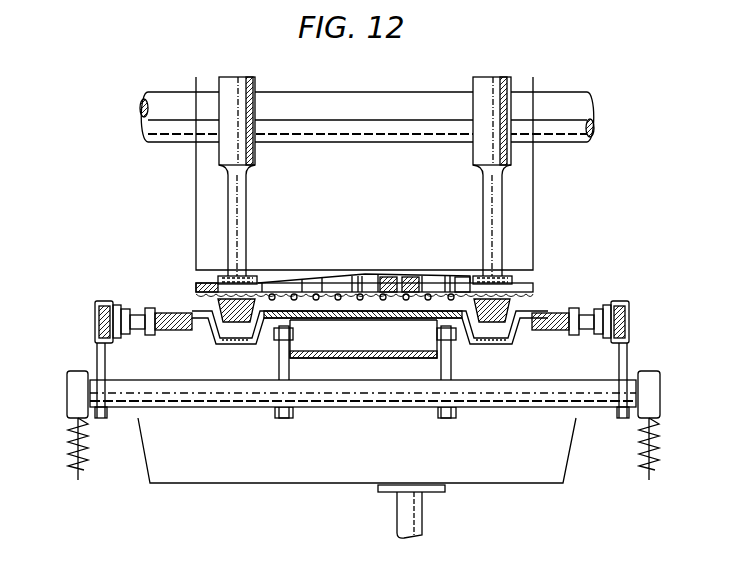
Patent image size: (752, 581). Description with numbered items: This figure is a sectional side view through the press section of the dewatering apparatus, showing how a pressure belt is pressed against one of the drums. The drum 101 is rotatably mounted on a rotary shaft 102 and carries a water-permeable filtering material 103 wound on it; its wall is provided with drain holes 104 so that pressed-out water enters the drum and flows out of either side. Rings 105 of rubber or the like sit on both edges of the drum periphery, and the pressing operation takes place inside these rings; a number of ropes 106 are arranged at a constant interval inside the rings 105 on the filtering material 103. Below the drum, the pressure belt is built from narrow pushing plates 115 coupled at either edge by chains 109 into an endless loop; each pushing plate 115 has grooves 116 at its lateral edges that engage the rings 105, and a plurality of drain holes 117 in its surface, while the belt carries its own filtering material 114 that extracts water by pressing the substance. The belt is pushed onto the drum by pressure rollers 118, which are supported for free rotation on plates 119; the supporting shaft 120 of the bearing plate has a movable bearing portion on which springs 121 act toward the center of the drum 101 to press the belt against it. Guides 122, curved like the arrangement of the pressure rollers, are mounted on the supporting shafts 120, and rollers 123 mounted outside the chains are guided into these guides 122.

The drum 101 is at (196, 198).
The rotary shaft 102 is at (563, 95).
The water-permeable filtering material 103 is at (366, 326).
The drain holes 104 is at (307, 291).
The rings 105 is at (242, 341).
The ropes 106 is at (358, 291).
The chains 109 is at (137, 314).
The filtering material 114 is at (453, 296).
The pushing plates 115 is at (305, 346).
The grooves 116 is at (236, 326).
The drain holes 117 is at (412, 290).
The pressure rollers 118 is at (362, 352).
The plates 119 is at (279, 392).
The supporting shaft 120 is at (197, 401).
The springs 121 is at (62, 446).
The guides 122 is at (102, 300).
The rollers 123 is at (100, 320).